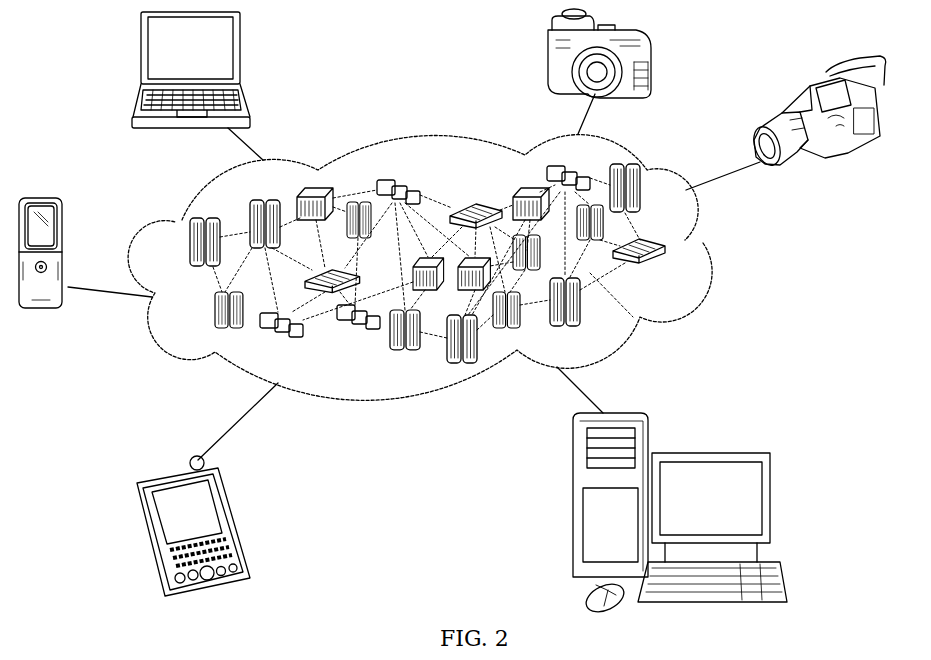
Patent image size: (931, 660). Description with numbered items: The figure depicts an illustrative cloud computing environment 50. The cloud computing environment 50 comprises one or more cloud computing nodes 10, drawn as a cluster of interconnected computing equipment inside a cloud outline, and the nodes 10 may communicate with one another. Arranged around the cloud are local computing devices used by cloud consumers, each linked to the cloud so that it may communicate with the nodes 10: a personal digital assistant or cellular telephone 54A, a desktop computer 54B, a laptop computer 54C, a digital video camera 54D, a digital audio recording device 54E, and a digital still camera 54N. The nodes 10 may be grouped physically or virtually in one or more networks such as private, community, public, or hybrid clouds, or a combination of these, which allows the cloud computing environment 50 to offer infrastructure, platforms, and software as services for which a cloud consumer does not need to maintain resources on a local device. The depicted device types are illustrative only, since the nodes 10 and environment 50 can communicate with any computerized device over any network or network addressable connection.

The cloud computing node 10 is at (668, 270).
The cloud computing environment 50 is at (703, 247).
The personal digital assistant or cellular telephone 54A is at (234, 517).
The desktop computer 54B is at (707, 452).
The laptop computer 54C is at (244, 57).
The digital video camera 54D is at (830, 160).
The digital audio recording device 54E is at (34, 312).
The digital still camera 54N is at (547, 63).